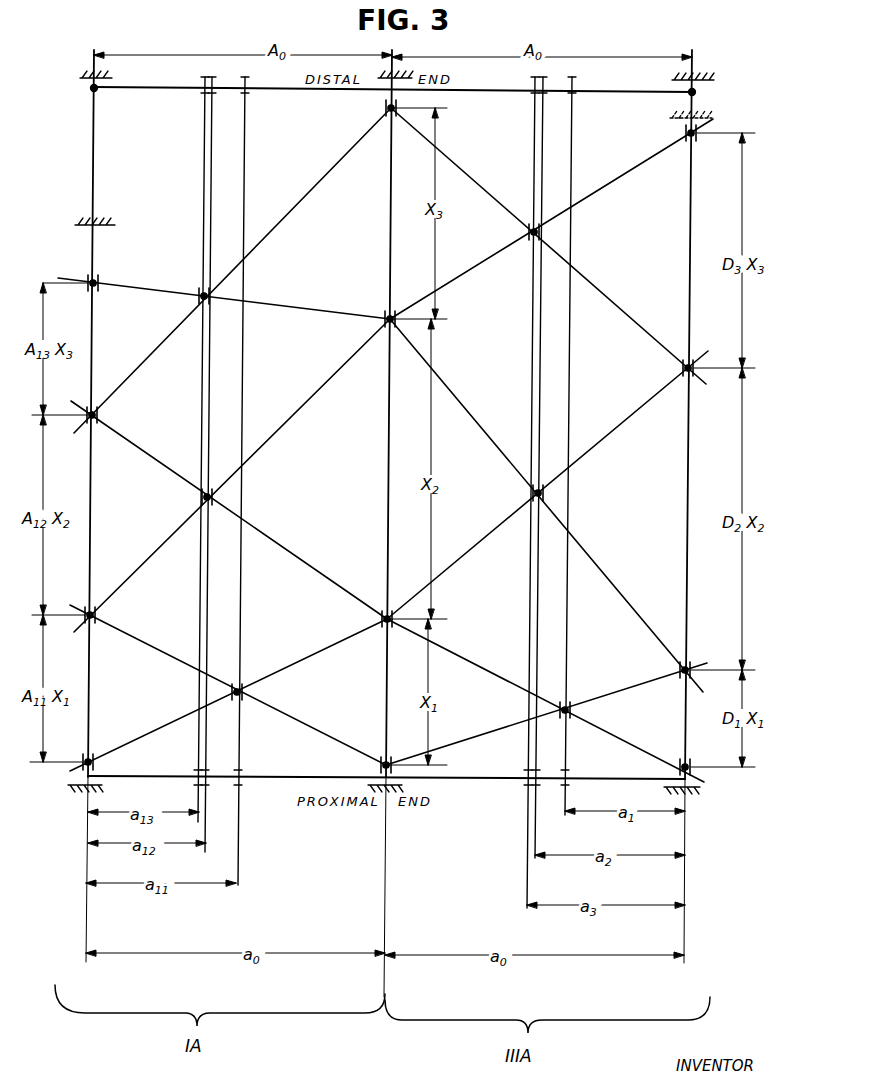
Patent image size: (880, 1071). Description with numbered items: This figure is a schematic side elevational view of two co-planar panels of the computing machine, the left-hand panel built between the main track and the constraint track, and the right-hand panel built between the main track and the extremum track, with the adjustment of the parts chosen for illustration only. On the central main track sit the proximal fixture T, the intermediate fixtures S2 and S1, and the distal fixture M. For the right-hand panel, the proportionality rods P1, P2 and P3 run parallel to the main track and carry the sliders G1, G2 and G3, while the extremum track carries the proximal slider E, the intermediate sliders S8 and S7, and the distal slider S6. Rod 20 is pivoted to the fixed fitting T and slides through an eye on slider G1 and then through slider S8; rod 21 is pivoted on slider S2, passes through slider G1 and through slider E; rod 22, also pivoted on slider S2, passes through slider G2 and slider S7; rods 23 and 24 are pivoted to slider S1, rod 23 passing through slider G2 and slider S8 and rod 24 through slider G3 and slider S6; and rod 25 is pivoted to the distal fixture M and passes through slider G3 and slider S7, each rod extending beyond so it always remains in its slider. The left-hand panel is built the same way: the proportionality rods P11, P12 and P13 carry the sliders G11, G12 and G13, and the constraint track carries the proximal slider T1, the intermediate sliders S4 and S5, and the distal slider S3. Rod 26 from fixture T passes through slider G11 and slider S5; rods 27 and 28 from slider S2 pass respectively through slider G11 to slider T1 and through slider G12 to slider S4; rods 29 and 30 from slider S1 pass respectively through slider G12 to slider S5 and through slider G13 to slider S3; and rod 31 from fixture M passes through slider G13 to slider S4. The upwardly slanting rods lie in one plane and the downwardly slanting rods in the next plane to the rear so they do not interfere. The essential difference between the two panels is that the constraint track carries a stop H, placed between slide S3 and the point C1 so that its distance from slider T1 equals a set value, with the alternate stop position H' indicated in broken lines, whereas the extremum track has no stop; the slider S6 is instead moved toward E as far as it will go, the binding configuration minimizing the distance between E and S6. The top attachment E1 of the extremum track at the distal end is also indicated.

The rod 20 is at (481, 736).
The rod 21 is at (492, 672).
The rod 22 is at (483, 538).
The rod 23 is at (472, 413).
The rod 24 is at (471, 271).
The rod 25 is at (489, 194).
The rod 26 is at (315, 729).
The rod 27 is at (310, 661).
The rod 28 is at (313, 568).
The rod 29 is at (305, 403).
The rod 30 is at (224, 314).
The rod 31 is at (284, 218).
The intermediate fixture S1 is at (384, 320).
The intermediate fixture S2 is at (381, 620).
The distal slider S3 is at (96, 288).
The intermediate slider S4 is at (98, 414).
The intermediate slider S5 is at (97, 615).
The distal slider S6 is at (697, 136).
The intermediate slider S7 is at (682, 369).
The intermediate slider S8 is at (679, 670).
The slider G1 is at (571, 708).
The slider G2 is at (545, 496).
The slider G3 is at (528, 232).
The slider G11 is at (244, 692).
The slider G12 is at (203, 498).
The slider G13 is at (200, 298).
The proportionality rod P1 is at (573, 152).
The proportionality rod P2 is at (544, 177).
The proportionality rod P3 is at (534, 137).
The proportionality rod P11 is at (240, 635).
The proportionality rod P12 is at (208, 598).
The proportionality rod P13 is at (196, 580).
The distal fixture M is at (386, 112).
The proximal fixture T is at (391, 762).
The proximal slider T1 is at (94, 763).
The proximal slider E is at (697, 781).
The distal right fixed point E1 is at (690, 95).
The point C1 is at (96, 91).
The stop H is at (105, 202).
The right ground support H' is at (711, 100).